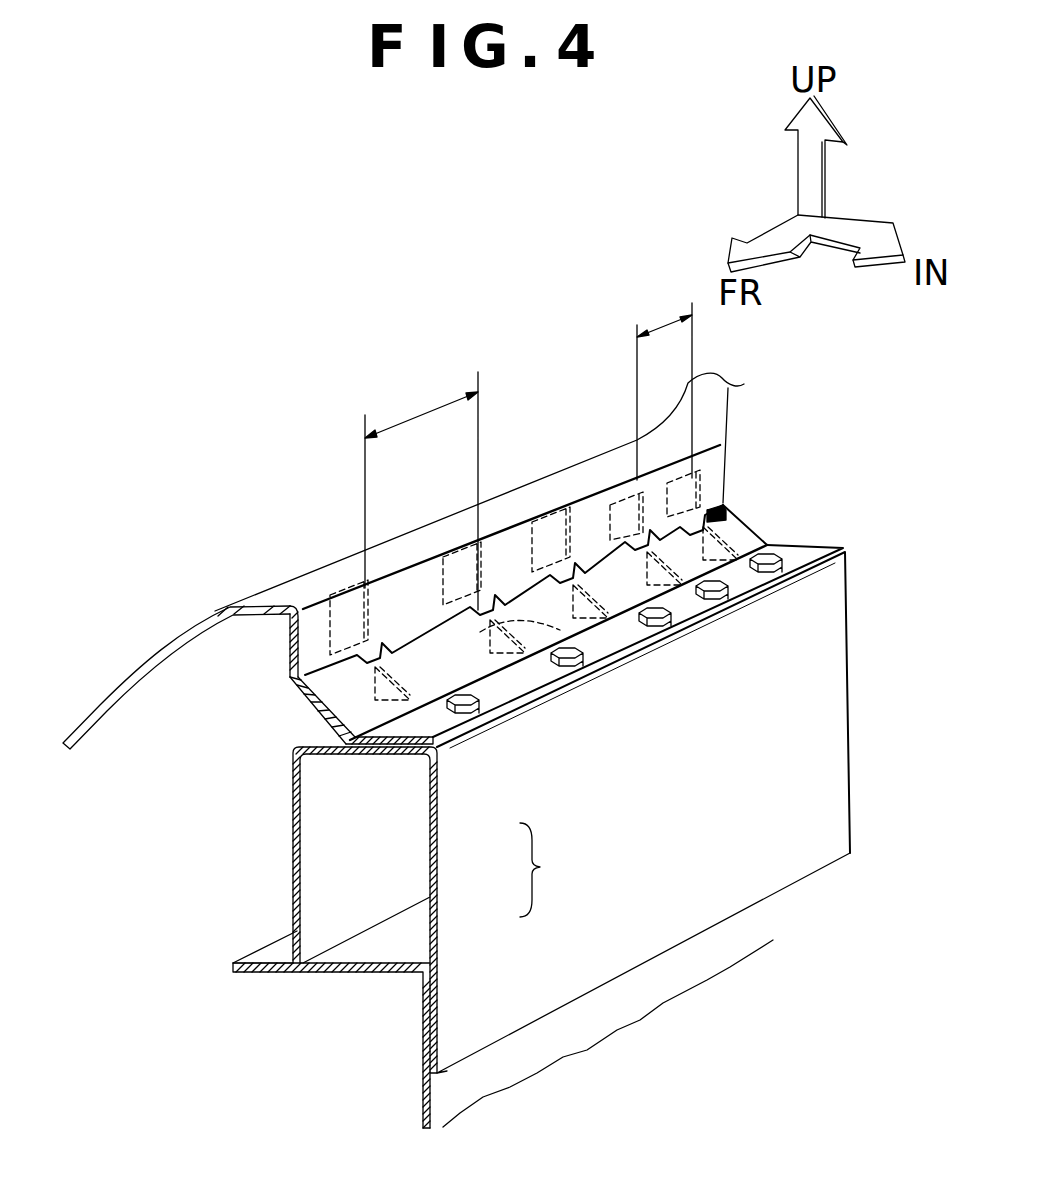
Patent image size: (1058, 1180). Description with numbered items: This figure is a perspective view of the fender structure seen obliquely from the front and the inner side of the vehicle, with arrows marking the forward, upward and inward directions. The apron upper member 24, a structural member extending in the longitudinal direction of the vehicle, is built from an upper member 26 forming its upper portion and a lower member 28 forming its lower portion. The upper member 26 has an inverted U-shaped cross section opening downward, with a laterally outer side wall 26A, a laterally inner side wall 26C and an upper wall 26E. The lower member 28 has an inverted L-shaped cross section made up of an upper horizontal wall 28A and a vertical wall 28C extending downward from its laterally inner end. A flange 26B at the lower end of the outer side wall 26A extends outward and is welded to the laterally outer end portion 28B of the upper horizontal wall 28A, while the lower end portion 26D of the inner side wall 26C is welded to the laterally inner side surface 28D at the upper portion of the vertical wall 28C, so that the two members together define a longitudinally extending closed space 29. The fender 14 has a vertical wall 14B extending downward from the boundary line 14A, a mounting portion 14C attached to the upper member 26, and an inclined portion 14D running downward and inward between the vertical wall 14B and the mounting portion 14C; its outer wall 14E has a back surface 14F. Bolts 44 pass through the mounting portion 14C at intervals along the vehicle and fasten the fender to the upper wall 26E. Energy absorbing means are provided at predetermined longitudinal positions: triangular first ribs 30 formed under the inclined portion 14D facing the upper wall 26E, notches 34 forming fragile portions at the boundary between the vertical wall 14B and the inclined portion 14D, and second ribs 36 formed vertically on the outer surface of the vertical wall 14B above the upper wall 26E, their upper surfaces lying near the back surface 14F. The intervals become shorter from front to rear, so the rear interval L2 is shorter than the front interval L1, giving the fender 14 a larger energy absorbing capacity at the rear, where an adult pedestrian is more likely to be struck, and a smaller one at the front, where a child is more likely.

The fender 14 is at (257, 590).
The boundary line 14A is at (360, 570).
The vertical wall 14B is at (420, 587).
The mounting portion 14C is at (527, 682).
The inclined portion 14D is at (437, 672).
The outer wall 14E is at (207, 615).
The back surface 14F is at (76, 750).
The apron upper member 24 is at (556, 870).
The upper member 26 is at (453, 869).
The laterally outer side wall 26A is at (293, 845).
The flange 26B is at (270, 950).
The laterally inner side wall 26C is at (840, 750).
The lower end portion 26D is at (543, 1010).
The upper wall 26E is at (300, 740).
The lower member 28 is at (402, 950).
The upper horizontal wall 28A is at (333, 977).
The laterally outer end portion 28B is at (245, 978).
The vertical wall 28C is at (423, 1090).
The laterally inner side surface 28D is at (433, 1015).
The closed cross section 29 is at (387, 886).
The first rib 30 is at (372, 692).
The notch 34 is at (387, 652).
The second rib 36 is at (613, 493).
The bolt 44 is at (477, 713).
The interval in a front portion L1 is at (422, 410).
The interval in a rear portion L2 is at (665, 322).